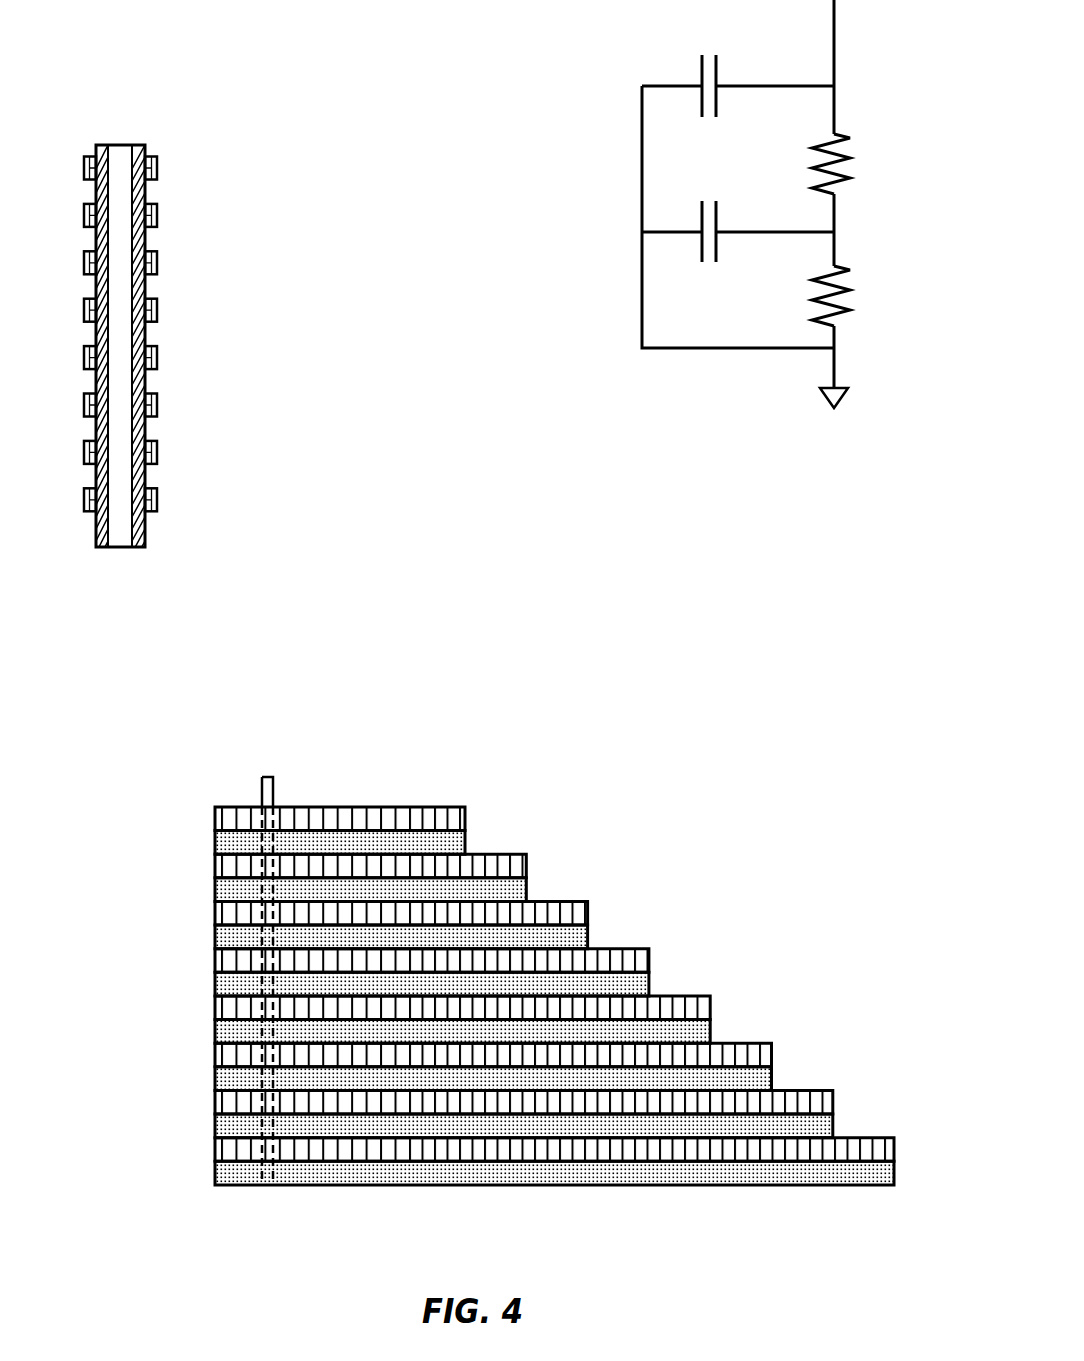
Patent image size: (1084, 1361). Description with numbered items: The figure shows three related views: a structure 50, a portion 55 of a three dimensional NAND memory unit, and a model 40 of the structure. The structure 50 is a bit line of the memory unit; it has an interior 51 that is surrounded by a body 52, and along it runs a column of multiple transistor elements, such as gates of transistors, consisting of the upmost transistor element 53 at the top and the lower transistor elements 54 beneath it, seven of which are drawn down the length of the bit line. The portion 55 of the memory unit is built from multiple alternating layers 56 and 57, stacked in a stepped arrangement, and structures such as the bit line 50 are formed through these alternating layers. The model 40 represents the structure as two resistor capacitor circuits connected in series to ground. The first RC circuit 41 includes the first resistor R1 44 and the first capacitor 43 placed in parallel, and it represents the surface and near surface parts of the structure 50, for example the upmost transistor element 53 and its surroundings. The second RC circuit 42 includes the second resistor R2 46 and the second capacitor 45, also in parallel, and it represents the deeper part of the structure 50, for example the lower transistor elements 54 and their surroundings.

The model 40 is at (698, 218).
The first RC circuit 41 is at (598, 117).
The second RC circuit 42 is at (597, 289).
The first capacitor 43 is at (748, 28).
The first resistor R1 44 is at (848, 150).
The second capacitor 45 is at (700, 213).
The second resistor R2 46 is at (847, 295).
The structure 50 is at (164, 624).
The interior 51 is at (120, 157).
The body 52 is at (97, 144).
The upmost transistor element 53 is at (158, 172).
The lower transistor elements 54 is at (171, 357).
The portion of the 3D NAND memory unit 55 is at (514, 1005).
The layers 56 is at (876, 1142).
The layers 57 is at (217, 1170).